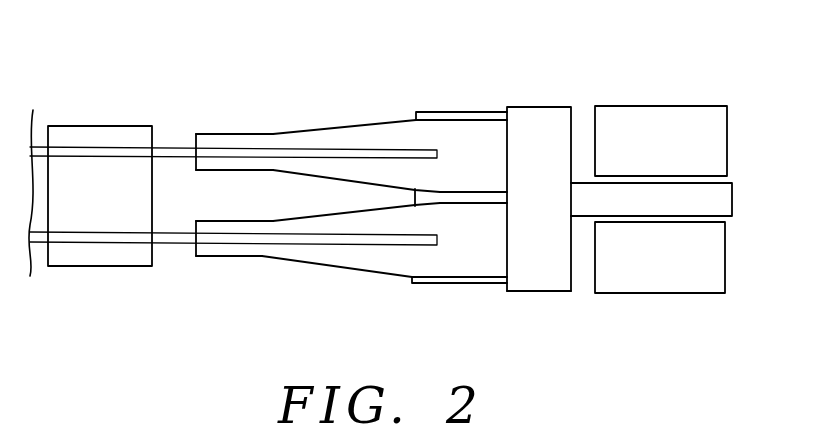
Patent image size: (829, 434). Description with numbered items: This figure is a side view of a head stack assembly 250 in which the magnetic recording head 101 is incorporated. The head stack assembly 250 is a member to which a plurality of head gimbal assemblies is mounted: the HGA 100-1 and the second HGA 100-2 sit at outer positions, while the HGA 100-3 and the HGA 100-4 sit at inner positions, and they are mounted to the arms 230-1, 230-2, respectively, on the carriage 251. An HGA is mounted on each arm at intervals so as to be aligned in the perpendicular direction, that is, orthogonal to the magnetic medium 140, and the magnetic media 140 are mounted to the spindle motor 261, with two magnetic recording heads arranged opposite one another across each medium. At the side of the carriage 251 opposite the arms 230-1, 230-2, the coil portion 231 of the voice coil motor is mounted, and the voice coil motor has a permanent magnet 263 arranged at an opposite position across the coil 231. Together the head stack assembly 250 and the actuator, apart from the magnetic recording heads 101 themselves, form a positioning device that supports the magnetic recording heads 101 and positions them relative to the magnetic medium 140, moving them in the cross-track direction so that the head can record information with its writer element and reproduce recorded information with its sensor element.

The spindle motor 261 is at (89, 140).
The magnetic medium 140 is at (167, 150).
The magnetic recording head 101 is at (194, 134).
The HGA 100-1 is at (267, 133).
The second HGA 100-2 is at (262, 257).
The HGA 100-3 is at (352, 168).
The HGA 100-4 is at (353, 214).
The arm 230-1 is at (425, 112).
The arm 230-2 is at (423, 284).
The head stack assembly 250 is at (546, 86).
The carriage 251 is at (542, 280).
The permanent magnet 263 is at (660, 120).
The coil portion 231 is at (720, 198).